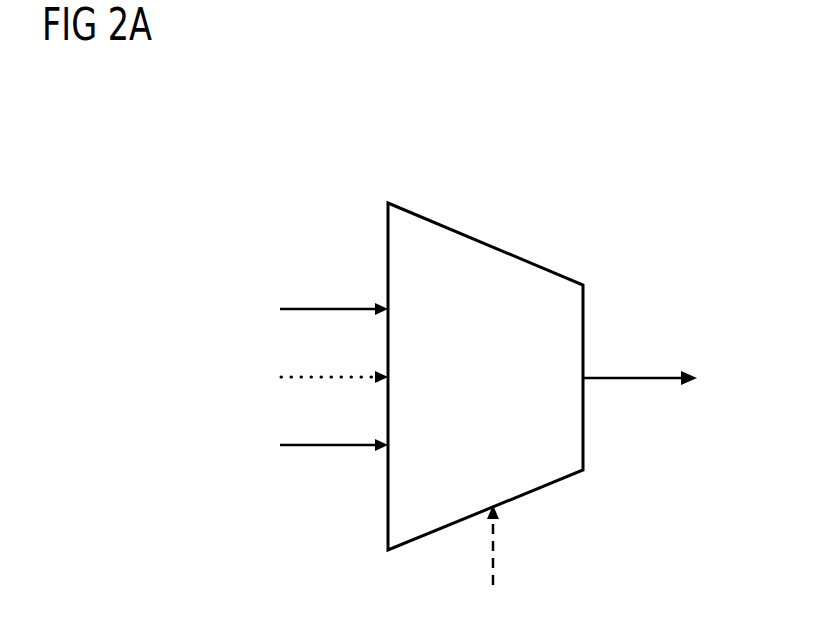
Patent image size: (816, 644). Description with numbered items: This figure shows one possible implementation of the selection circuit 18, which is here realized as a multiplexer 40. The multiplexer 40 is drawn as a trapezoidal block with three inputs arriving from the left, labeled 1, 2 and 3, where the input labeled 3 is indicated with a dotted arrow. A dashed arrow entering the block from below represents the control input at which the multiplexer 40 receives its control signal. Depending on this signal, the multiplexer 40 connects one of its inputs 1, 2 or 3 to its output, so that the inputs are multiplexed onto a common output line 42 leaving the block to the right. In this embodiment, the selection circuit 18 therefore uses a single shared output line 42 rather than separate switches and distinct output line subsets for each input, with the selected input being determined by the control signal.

The selection circuit 18 is at (437, 331).
The multiplexer 40 is at (471, 237).
The common output line 42 is at (623, 378).
The first input 1 is at (349, 310).
The second input 2 is at (349, 448).
The third input 3 is at (349, 378).